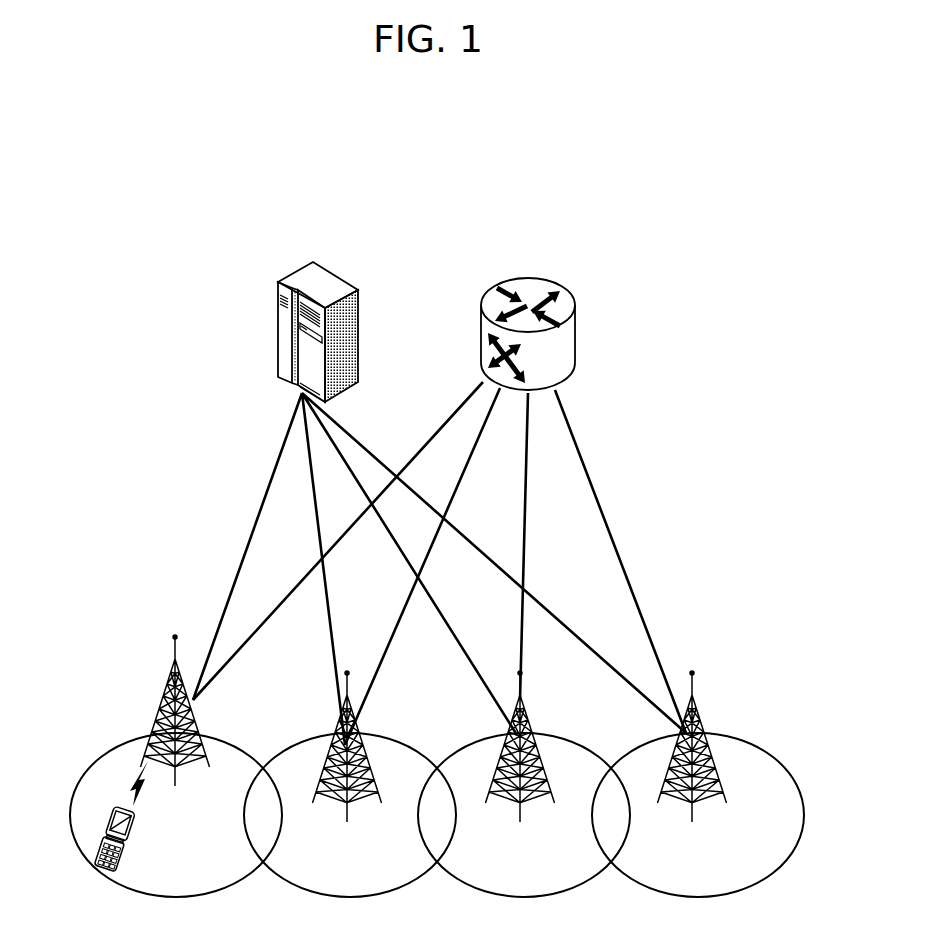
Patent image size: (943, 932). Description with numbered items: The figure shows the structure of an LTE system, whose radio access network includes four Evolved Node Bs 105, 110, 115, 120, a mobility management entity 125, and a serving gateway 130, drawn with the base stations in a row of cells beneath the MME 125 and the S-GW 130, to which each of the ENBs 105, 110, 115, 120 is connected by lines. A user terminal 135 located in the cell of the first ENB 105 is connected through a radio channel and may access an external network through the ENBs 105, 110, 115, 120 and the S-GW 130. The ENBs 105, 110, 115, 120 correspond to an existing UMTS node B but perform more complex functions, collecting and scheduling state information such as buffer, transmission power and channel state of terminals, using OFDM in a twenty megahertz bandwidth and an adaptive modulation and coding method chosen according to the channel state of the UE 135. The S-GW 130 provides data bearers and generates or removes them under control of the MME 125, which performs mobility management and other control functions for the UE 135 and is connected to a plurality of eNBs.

The Evolved Node B 105 is at (162, 695).
The Evolved Node B 110 is at (340, 709).
The Evolved Node B 115 is at (528, 712).
The Evolved Node B 120 is at (700, 710).
The mobility management entity 125 is at (292, 272).
The serving gateway 130 is at (510, 278).
The user terminal 135 is at (131, 835).